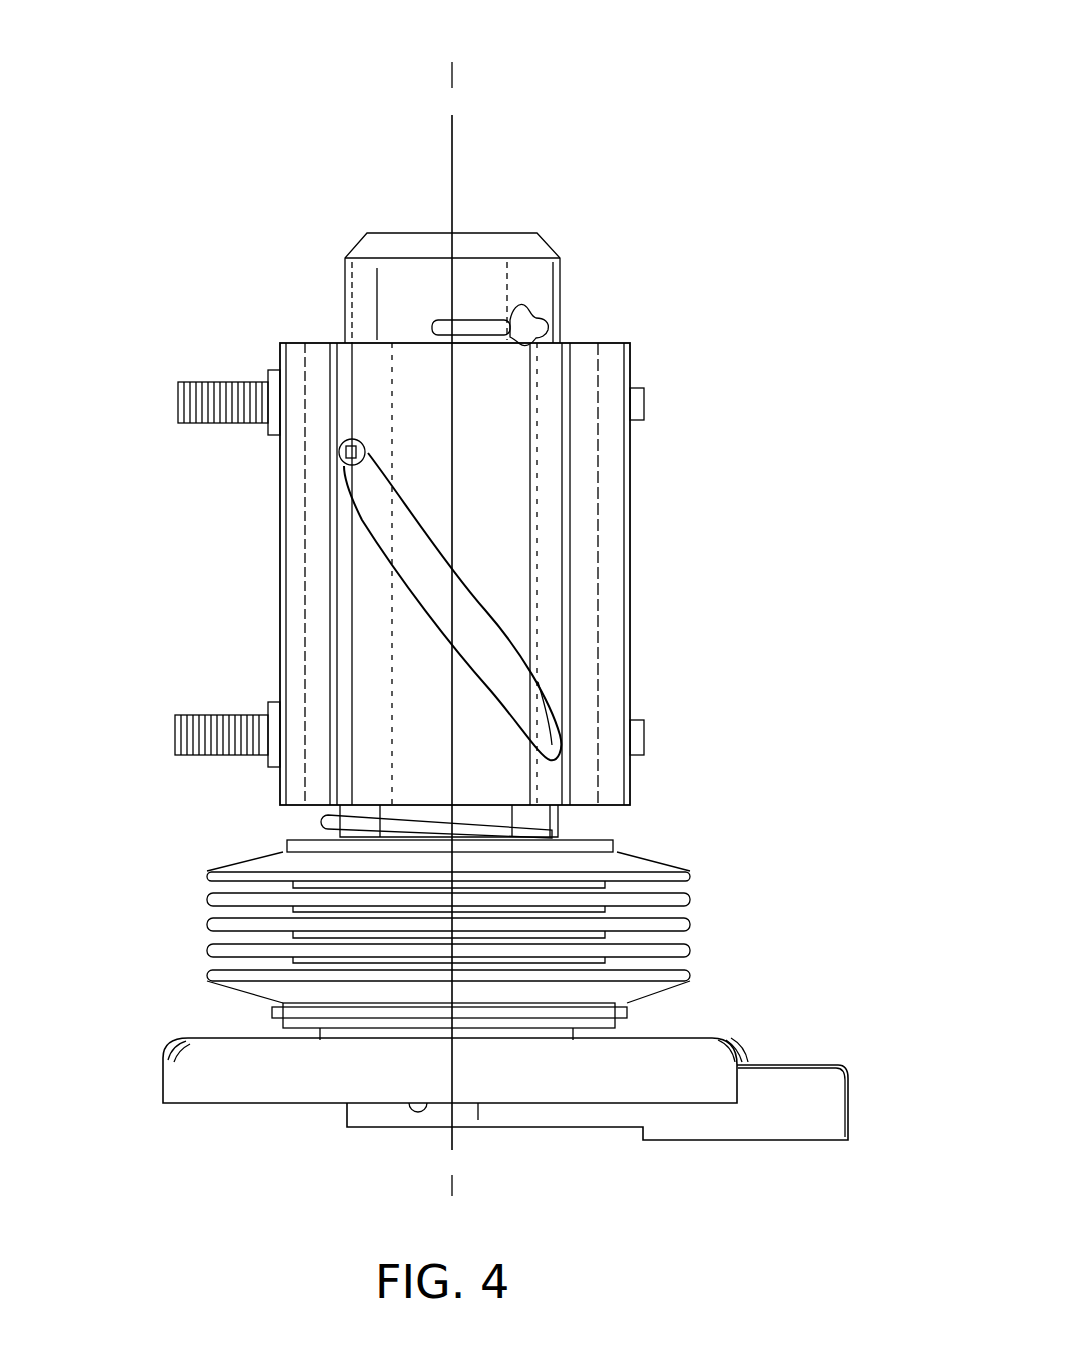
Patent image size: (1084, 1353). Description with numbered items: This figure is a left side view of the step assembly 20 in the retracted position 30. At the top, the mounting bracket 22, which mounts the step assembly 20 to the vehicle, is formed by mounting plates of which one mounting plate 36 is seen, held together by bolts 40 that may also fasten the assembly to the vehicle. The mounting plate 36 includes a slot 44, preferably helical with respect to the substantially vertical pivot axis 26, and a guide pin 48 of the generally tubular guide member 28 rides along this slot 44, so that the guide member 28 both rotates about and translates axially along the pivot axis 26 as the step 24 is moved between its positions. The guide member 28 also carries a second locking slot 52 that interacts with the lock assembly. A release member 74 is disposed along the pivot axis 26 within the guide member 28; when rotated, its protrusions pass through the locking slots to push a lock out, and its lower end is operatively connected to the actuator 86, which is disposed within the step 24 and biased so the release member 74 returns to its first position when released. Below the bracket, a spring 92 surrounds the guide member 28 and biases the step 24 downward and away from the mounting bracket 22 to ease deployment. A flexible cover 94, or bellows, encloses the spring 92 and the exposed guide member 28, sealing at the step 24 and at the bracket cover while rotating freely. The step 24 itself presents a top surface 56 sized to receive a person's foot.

The step assembly 20 is at (178, 97).
The mounting bracket 22 is at (255, 352).
The step 24 is at (680, 1057).
The pivot axis 26 is at (452, 66).
The guide member 28 is at (556, 258).
The retracted position 30 is at (862, 278).
The mounting plate 36 is at (545, 500).
The bolts 40 is at (207, 425).
The slot 44 is at (483, 607).
The guide pin 48 is at (345, 462).
The second locking slot 52 is at (548, 326).
The top surface 56 is at (218, 1040).
The release member 74 is at (437, 332).
The actuator 86 is at (790, 1120).
The spring 92 is at (323, 822).
The flexible cover 94 is at (237, 872).